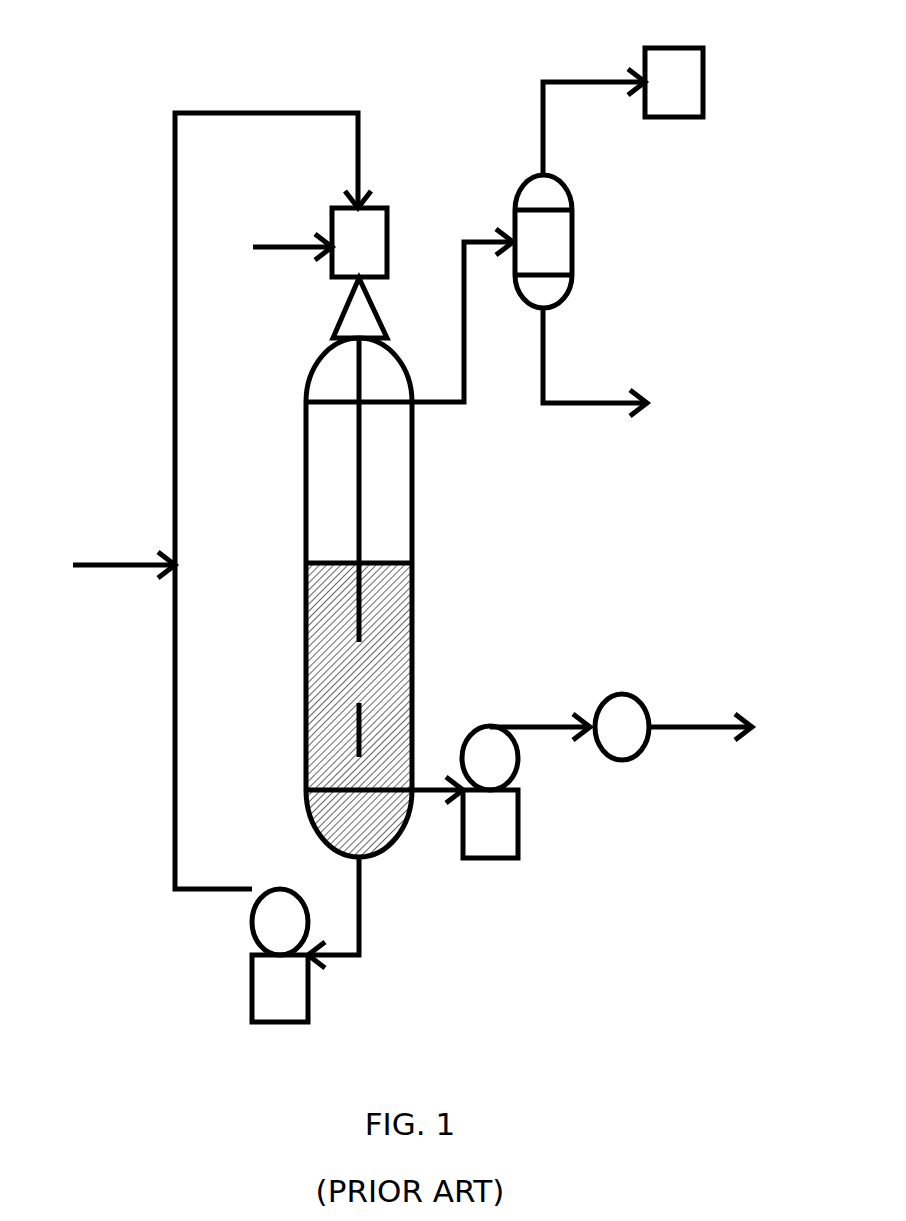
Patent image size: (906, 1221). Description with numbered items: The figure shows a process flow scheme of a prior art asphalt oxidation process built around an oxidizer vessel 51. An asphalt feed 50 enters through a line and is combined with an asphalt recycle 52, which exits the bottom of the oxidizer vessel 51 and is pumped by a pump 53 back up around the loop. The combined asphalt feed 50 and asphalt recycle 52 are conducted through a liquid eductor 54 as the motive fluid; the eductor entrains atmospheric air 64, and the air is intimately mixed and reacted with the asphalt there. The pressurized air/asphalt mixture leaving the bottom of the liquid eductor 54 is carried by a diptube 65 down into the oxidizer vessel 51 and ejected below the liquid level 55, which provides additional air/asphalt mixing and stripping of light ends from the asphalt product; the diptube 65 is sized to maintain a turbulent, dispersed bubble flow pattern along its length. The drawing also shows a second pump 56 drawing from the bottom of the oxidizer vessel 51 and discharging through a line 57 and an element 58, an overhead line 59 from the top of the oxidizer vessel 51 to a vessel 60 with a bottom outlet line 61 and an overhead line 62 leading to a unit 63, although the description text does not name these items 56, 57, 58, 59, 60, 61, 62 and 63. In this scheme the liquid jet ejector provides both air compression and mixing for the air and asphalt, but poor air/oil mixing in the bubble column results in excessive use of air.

The asphalt feed 50 is at (124, 547).
The oxidizer vessel 51 is at (339, 597).
The asphalt recycle 52 is at (273, 501).
The pump 53 is at (279, 939).
The liquid eductor 54 is at (382, 273).
The liquid level 55 is at (385, 707).
The bottoms pump 56 is at (435, 792).
The product line 57 is at (540, 709).
The control valve / flow meter 58 is at (673, 703).
The overhead vapor line 59 is at (462, 342).
The separator vessel 60 is at (567, 241).
The separator bottoms line 61 is at (595, 361).
The separator overhead line 62 is at (594, 101).
The overhead receiver 63 is at (698, 82).
The atmospheric air 64 is at (292, 228).
The diptube 65 is at (359, 706).